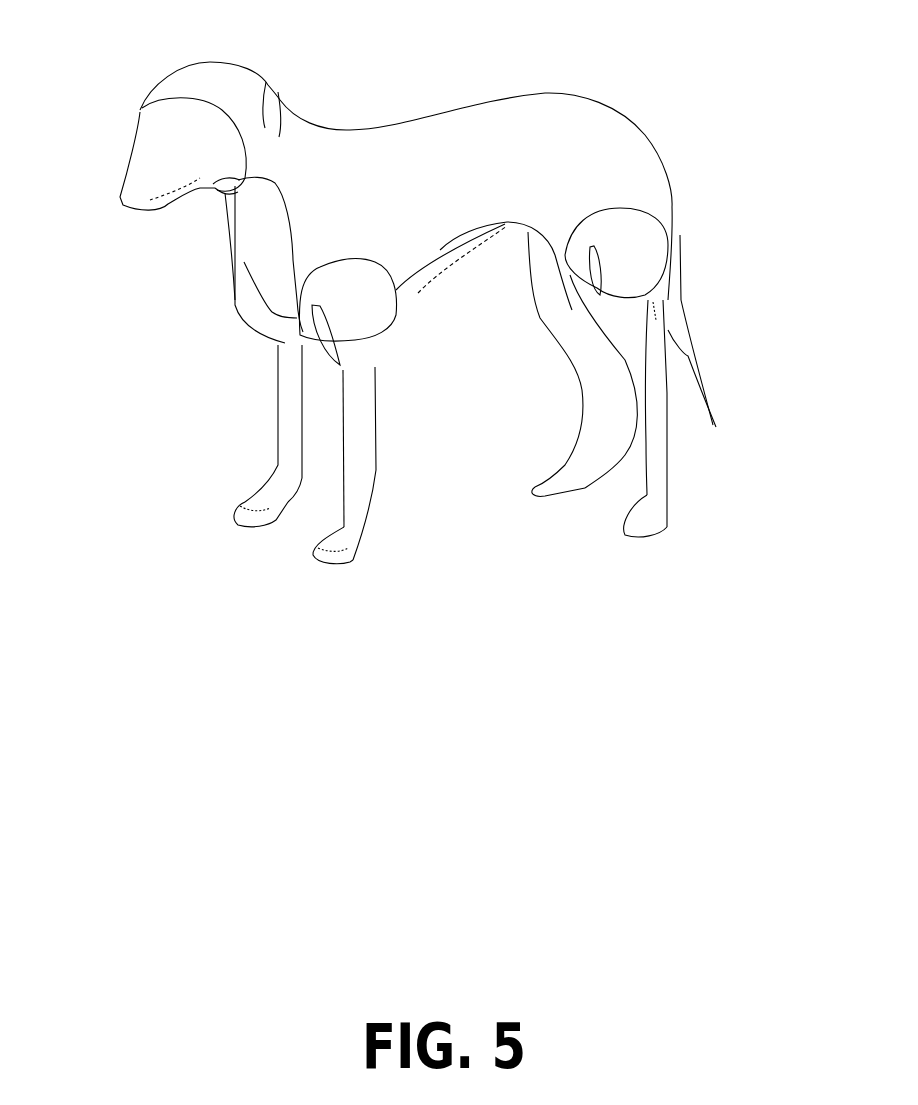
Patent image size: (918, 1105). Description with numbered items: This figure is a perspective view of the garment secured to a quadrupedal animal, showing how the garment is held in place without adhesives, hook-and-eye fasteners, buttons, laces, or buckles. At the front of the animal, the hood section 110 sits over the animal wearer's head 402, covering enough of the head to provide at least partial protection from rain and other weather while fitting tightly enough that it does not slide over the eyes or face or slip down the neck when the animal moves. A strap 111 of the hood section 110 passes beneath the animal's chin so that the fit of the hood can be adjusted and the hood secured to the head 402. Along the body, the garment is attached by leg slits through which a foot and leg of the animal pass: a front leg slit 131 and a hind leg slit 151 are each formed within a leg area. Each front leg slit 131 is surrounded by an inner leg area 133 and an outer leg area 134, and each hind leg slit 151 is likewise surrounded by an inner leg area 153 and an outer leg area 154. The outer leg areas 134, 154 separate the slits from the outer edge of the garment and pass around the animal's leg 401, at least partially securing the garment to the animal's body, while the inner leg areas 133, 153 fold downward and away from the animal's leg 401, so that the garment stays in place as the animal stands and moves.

The hood section 110 is at (213, 78).
The animal wearer's head 402 is at (177, 142).
The strap 111 is at (222, 180).
The animal's leg 401 is at (280, 403).
The inner leg area 133 is at (358, 297).
The front leg slit 131 is at (362, 333).
The outer leg area 134 is at (383, 328).
The outer leg area 154 is at (588, 287).
The inner leg area 153 is at (633, 256).
The hind leg slit 151 is at (652, 285).